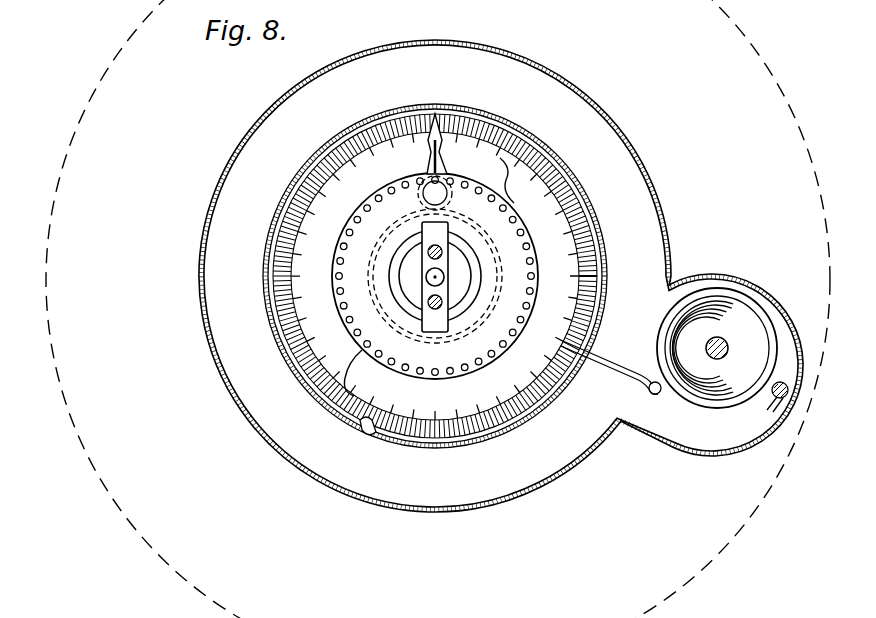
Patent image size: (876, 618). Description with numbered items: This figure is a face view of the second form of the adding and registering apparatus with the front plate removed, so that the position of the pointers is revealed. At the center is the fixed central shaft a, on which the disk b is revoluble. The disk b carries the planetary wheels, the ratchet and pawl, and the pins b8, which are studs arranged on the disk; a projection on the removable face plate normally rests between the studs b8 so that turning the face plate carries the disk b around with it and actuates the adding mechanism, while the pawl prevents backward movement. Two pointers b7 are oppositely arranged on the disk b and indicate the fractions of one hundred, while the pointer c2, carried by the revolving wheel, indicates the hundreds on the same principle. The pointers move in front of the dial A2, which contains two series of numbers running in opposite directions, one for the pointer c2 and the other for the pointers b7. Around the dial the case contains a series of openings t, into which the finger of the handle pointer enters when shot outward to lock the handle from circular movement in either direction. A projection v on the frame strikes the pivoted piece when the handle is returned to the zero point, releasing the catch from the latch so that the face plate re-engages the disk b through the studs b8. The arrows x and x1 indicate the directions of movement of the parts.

The dial A2 is at (477, 437).
The openings in the case t is at (364, 118).
The disk b is at (435, 276).
The pins b8 is at (418, 364).
The central shaft a is at (440, 274).
The pointer c2 is at (446, 144).
The direction arrow of pointer x1 is at (415, 158).
The direction arrow of disc x is at (358, 300).
The pointer b7 is at (429, 277).
The projection on the frame v is at (358, 426).